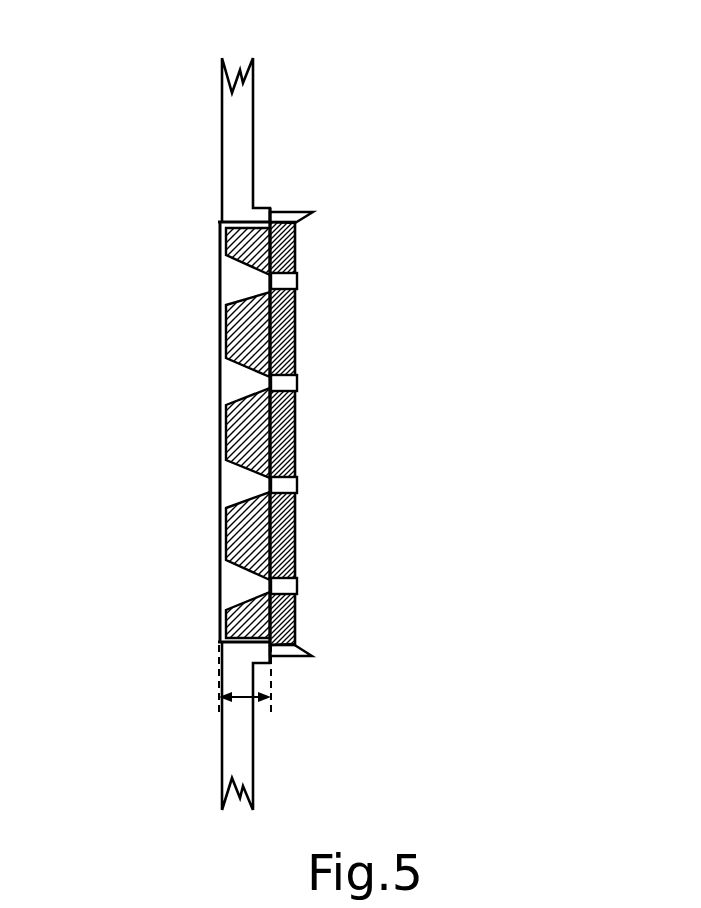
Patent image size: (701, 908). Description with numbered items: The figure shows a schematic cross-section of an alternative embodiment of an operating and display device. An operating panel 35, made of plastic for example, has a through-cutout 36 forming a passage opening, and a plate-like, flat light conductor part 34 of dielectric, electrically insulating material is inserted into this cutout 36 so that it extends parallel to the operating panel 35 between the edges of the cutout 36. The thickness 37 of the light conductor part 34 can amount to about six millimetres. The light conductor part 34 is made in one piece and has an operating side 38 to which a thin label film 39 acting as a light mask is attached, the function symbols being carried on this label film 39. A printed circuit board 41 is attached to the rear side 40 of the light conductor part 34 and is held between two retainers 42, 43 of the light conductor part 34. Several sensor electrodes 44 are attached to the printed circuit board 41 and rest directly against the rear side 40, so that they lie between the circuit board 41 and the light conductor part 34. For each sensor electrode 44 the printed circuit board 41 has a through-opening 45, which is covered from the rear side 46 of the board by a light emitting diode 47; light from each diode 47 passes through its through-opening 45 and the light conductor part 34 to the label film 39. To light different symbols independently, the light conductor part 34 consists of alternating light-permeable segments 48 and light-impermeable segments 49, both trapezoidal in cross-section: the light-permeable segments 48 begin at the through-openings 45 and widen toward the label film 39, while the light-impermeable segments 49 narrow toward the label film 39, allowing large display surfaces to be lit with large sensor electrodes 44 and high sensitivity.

The light conductor part 34 is at (222, 290).
The operating panel 35 is at (238, 158).
The through-cutout 36 is at (238, 222).
The thickness 37 is at (240, 700).
The operating side 38 is at (205, 500).
The label film 39 is at (205, 626).
The rear side 40 is at (306, 518).
The printed circuit board 41 is at (296, 302).
The retainer 42 is at (290, 211).
The retainer 43 is at (305, 657).
The sensor electrode 44 is at (294, 249).
The through-opening 45 is at (295, 377).
The rear side 46 is at (297, 237).
The light emitting diode 47 is at (300, 281).
The light-permeable segment 48 is at (243, 279).
The light-impermeable segment 49 is at (240, 332).